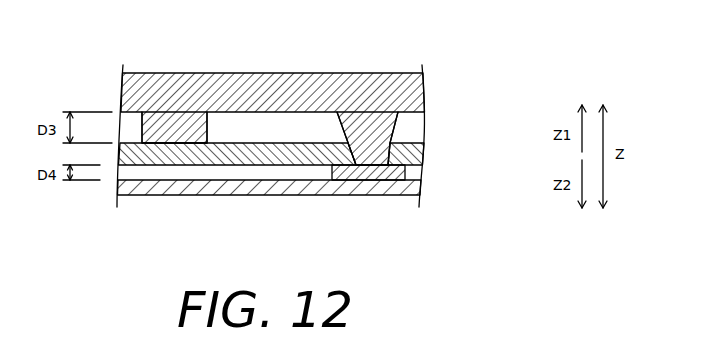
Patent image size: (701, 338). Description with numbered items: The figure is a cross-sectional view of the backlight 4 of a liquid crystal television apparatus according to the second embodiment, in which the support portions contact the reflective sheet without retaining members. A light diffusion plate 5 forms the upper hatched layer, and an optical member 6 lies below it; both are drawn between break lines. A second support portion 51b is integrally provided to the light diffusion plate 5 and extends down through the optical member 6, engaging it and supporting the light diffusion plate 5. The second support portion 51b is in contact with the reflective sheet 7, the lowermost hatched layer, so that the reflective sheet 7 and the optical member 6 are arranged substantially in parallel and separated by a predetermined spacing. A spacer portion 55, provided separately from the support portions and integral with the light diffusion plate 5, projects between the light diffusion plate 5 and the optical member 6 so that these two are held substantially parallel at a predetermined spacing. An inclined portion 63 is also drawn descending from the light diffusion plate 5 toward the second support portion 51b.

The backlight 4 is at (305, 140).
The light diffusion plate 5 is at (427, 90).
The optical member 6 is at (422, 147).
The reflective sheet 7 is at (418, 187).
The spacer portion 55 is at (205, 136).
The inclined connecting portion 63 is at (358, 150).
The second support portion 51b is at (341, 208).